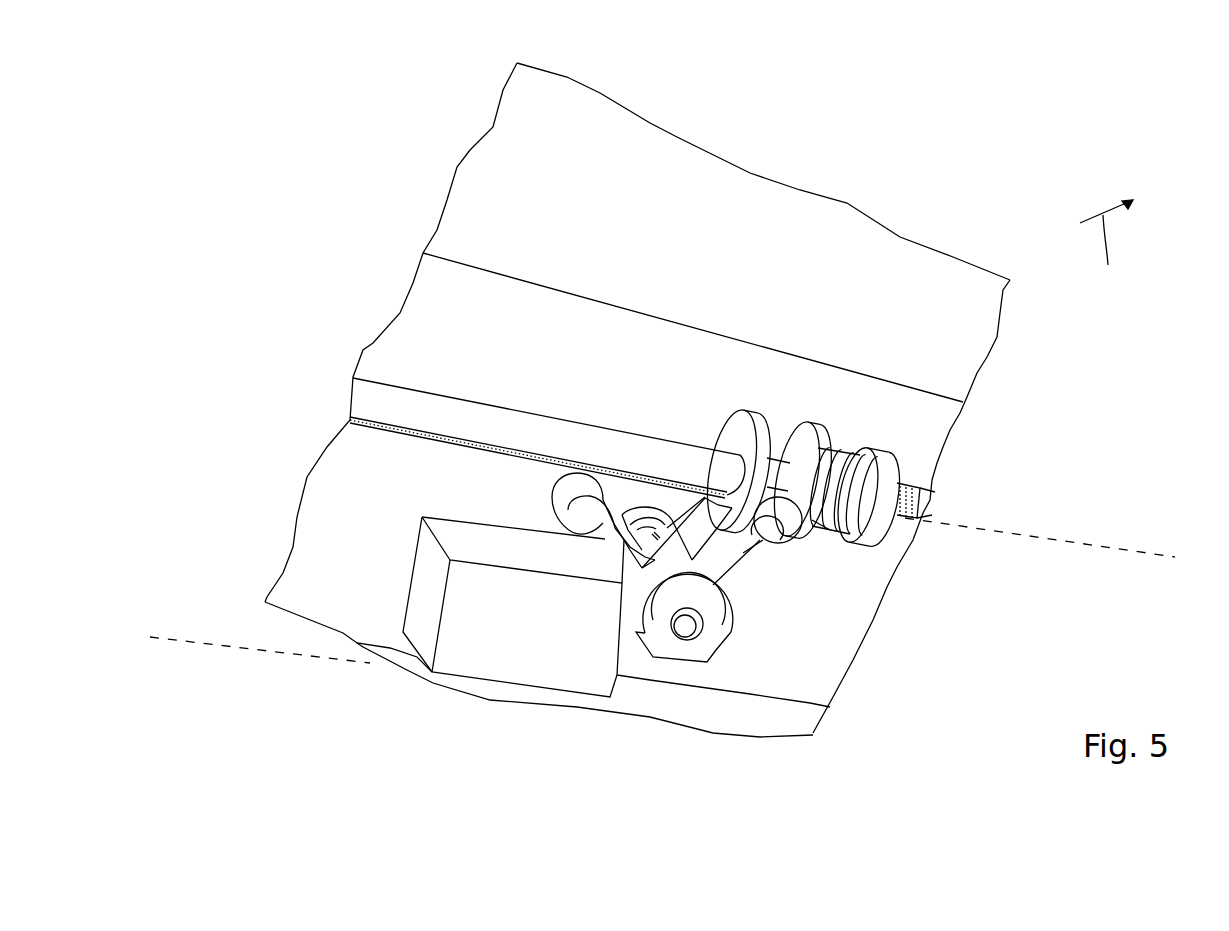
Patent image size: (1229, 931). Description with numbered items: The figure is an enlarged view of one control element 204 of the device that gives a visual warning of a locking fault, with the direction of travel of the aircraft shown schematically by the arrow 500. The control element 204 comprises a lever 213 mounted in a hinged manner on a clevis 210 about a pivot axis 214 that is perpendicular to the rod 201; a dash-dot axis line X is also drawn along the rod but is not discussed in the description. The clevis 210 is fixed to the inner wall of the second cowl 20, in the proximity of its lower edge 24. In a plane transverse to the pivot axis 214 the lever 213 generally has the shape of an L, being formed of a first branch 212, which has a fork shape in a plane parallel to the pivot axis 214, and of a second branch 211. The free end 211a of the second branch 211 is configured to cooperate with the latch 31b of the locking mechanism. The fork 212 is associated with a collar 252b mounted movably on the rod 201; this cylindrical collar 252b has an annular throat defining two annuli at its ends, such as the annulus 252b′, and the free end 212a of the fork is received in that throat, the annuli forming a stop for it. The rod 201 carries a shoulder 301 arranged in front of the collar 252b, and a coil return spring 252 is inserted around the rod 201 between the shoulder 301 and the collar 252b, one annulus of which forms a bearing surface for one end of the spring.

The second cowl 20 is at (742, 367).
The lower edge 24 is at (782, 715).
The latch 31b is at (463, 662).
The rod 201 is at (358, 402).
The control element 204 is at (714, 676).
The clevis 210 is at (719, 628).
The second branch 211 is at (624, 540).
The free end 211a is at (583, 520).
The first branch 212 is at (743, 553).
The free end of the fork 212a is at (800, 540).
The lever 213 is at (655, 533).
The pivot axis 214 is at (690, 633).
The return spring 252 is at (847, 447).
The collar 252b is at (797, 418).
The annulus 252b′ is at (810, 537).
The shoulder 301 is at (865, 525).
The arrow 500 is at (1111, 250).
The axis X is at (180, 640).